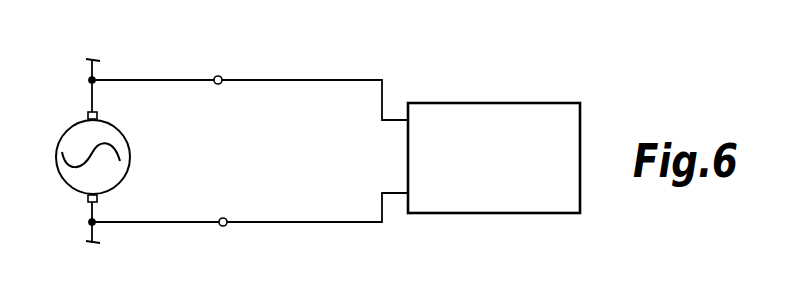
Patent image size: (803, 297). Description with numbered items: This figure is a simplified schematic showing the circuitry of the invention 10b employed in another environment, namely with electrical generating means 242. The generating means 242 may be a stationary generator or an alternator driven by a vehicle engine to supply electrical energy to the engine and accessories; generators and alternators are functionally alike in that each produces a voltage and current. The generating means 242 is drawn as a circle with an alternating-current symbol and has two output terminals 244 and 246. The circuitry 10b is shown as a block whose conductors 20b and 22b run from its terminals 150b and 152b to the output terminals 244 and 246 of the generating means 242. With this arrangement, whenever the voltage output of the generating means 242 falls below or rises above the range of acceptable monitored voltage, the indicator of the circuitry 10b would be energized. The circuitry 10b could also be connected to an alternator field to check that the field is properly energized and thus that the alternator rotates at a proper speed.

The circuitry of the invention 10b is at (495, 103).
The conductor 20b is at (305, 80).
The conductor 22b is at (290, 225).
The terminal 150b is at (214, 77).
The terminal 152b is at (226, 218).
The electrical generating means 242 is at (132, 163).
The output terminal 244 is at (88, 113).
The output terminal 246 is at (88, 201).